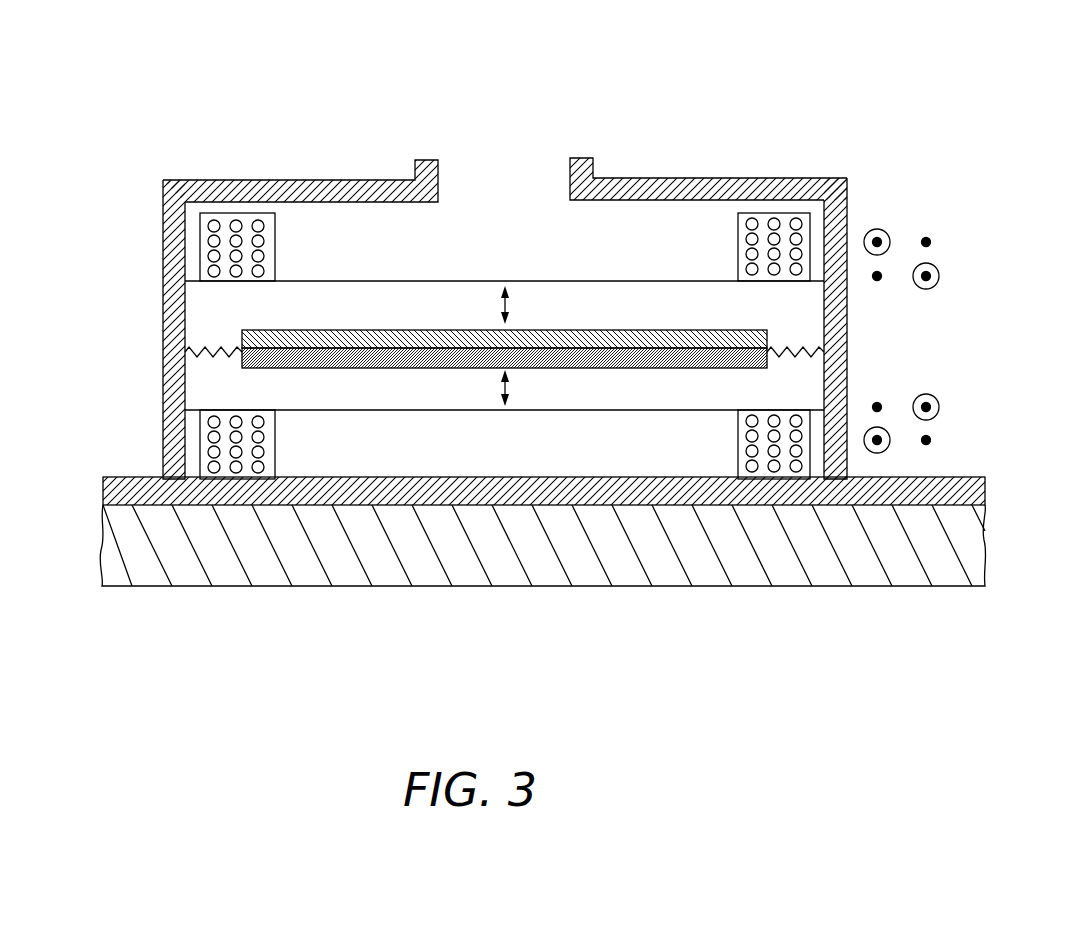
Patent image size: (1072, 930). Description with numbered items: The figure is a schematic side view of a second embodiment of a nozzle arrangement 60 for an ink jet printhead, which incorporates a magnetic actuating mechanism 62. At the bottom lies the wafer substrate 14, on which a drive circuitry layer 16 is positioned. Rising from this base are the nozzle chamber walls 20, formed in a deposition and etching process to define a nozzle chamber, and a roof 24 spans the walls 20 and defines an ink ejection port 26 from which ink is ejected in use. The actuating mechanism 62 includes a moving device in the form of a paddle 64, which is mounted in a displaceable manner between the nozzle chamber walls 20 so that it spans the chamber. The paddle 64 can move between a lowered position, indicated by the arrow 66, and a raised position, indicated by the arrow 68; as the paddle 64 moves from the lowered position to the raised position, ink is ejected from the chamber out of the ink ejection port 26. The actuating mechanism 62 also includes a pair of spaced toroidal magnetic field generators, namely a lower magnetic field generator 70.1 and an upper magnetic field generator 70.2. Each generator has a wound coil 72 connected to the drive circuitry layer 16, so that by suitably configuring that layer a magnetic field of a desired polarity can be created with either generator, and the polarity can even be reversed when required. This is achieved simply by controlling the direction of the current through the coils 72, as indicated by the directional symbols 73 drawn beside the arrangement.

The wafer substrate 14 is at (967, 558).
The drive circuitry layer 16 is at (985, 487).
The nozzle chamber walls 20 is at (163, 333).
The roof 24 is at (222, 180).
The ink ejection port 26 is at (510, 158).
The nozzle arrangement 60 is at (742, 125).
The actuating mechanism 62 is at (862, 328).
The paddle 64 is at (357, 330).
The arrow indicating lowered position 66 is at (503, 385).
The arrow indicating raised position 68 is at (508, 310).
The lower magnetic field generator 70.1 is at (192, 440).
The upper magnetic field generator 70.2 is at (190, 240).
The wound coil 72 is at (775, 222).
The directional symbols 73 is at (948, 258).